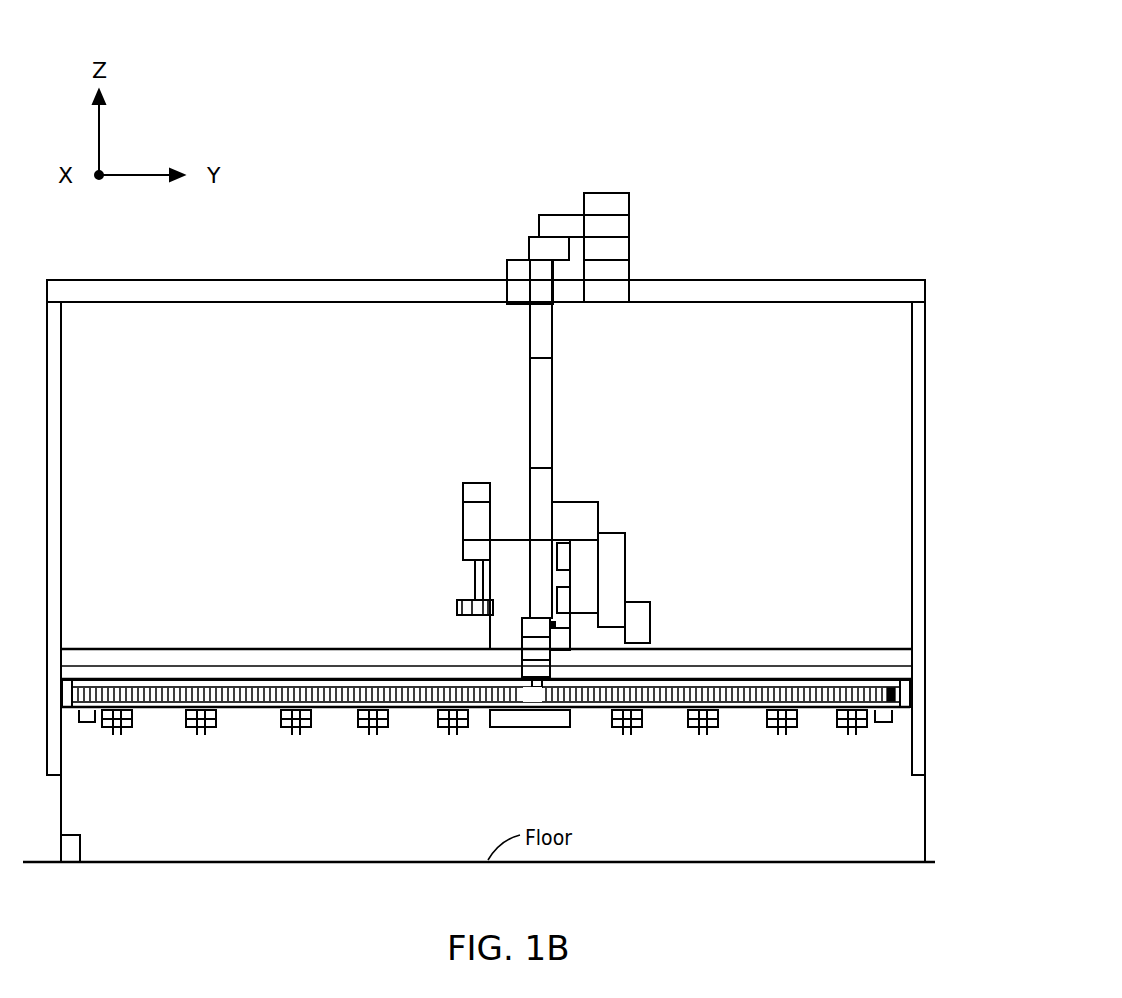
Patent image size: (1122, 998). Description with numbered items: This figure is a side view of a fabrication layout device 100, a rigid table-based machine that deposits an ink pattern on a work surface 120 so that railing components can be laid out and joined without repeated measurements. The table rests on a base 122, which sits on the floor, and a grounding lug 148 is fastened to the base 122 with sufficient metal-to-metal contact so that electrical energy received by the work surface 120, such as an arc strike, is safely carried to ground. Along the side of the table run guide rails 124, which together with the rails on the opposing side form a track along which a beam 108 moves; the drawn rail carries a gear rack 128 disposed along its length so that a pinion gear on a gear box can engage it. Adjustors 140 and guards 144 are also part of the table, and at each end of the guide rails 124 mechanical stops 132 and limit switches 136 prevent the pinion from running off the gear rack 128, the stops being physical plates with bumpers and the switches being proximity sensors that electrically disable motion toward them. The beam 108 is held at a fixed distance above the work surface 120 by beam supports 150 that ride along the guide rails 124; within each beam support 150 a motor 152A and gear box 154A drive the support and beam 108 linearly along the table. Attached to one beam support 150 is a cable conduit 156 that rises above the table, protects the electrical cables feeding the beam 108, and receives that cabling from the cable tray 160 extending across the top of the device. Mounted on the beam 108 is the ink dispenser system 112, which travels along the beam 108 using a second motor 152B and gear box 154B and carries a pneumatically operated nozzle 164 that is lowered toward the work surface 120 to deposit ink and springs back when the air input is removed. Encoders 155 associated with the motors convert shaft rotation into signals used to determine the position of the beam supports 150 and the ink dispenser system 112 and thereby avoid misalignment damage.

The fabrication layout device 100 is at (712, 95).
The beam 108 is at (570, 540).
The ink dispenser system 112 is at (607, 547).
The work surface 120 is at (277, 648).
The base 122 is at (60, 820).
The guide rails 124 is at (260, 712).
The gear rack 128 is at (732, 712).
The mechanical stops 132 is at (65, 710).
The limit switches 136 is at (105, 725).
The adjustors 140 is at (373, 730).
The guards 144 is at (130, 665).
The grounding lug 148 is at (78, 837).
The beam supports 150 is at (515, 728).
The motor 152A is at (522, 640).
The motor 152B is at (463, 502).
The gear box 154A is at (553, 677).
The gear box 154B is at (463, 548).
The encoders 155 is at (465, 484).
The cable conduit 156 is at (553, 366).
The cable tray 160 is at (200, 280).
The nozzle 164 is at (650, 603).